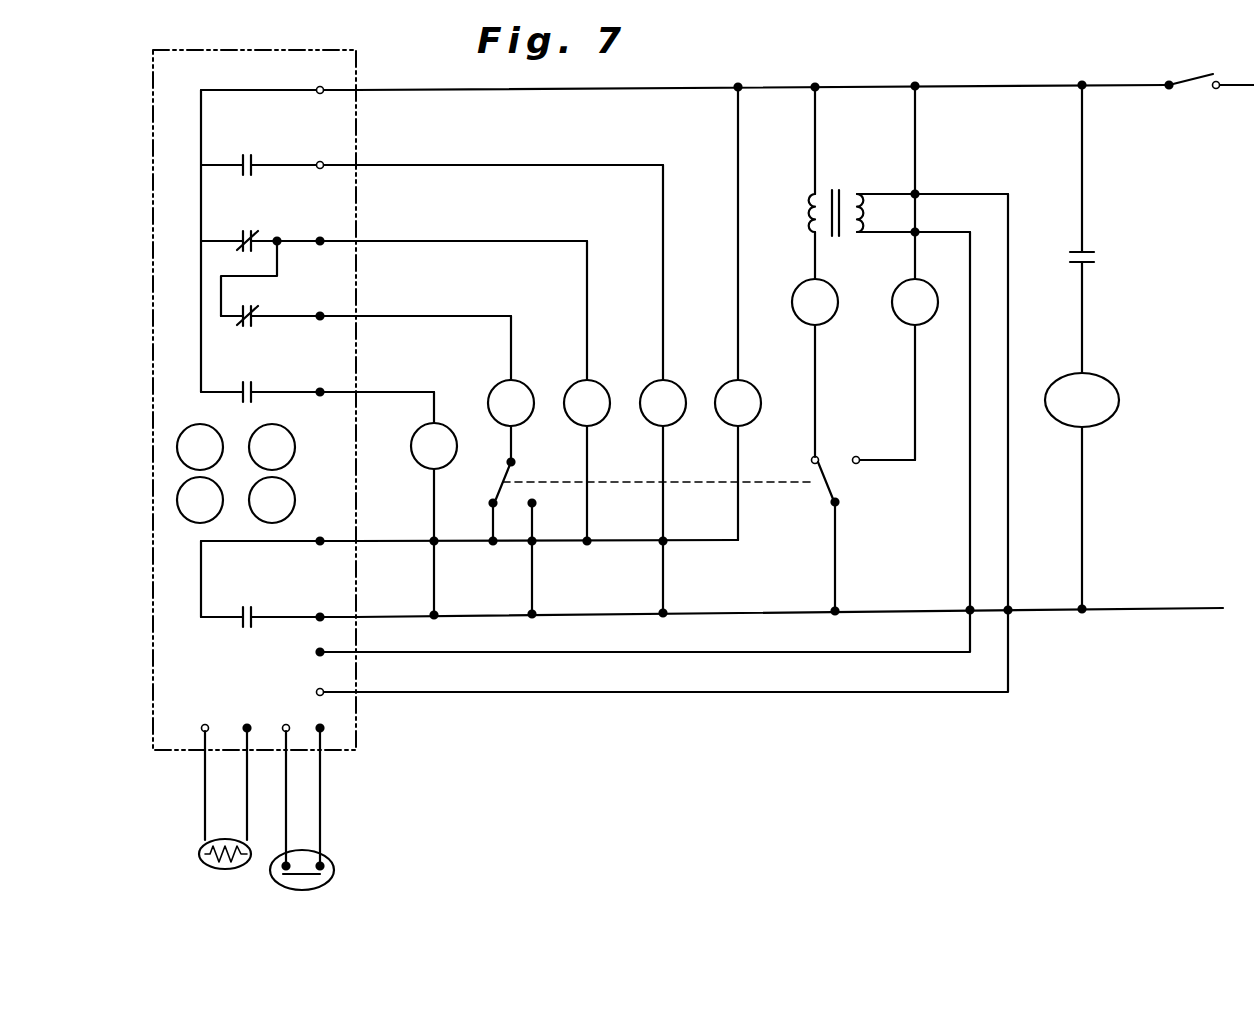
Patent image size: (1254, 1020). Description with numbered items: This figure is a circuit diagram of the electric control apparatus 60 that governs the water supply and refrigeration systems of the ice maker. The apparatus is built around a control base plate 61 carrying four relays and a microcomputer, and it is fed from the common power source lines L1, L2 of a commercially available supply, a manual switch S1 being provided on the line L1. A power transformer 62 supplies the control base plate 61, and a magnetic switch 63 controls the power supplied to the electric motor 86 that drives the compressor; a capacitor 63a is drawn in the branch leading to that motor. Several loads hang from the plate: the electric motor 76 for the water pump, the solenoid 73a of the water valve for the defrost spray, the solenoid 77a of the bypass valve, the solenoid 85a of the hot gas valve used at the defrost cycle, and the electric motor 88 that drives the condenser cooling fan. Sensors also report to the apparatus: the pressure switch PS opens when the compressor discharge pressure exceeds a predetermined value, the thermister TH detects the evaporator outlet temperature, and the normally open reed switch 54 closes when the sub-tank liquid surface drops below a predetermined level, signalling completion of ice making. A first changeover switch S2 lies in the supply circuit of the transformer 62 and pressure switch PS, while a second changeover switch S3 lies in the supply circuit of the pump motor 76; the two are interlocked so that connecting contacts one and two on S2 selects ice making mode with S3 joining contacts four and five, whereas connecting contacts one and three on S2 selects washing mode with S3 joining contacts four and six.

The reed switch 54 is at (331, 862).
The electric control apparatus 60 is at (150, 294).
The control base plate 61 is at (152, 127).
The power transformer 62 is at (854, 194).
The magnetic switch 63 is at (728, 387).
The capacitor 63a is at (1091, 258).
The solenoid of water valve 73a is at (420, 465).
The electric motor 76 is at (502, 387).
The solenoid of bypass valve 77a is at (898, 317).
The solenoid of hot gas valve 85a is at (656, 387).
The electric motor 86 is at (1118, 400).
The electric motor 88 is at (575, 387).
The thermister TH is at (200, 858).
The pressure switch PS is at (795, 288).
The manual switch S1 is at (1210, 76).
The first changeover switch S2 is at (832, 450).
The second changeover switch S3 is at (525, 480).
The common power source line L1 is at (1014, 84).
The common power source line L2 is at (1050, 611).